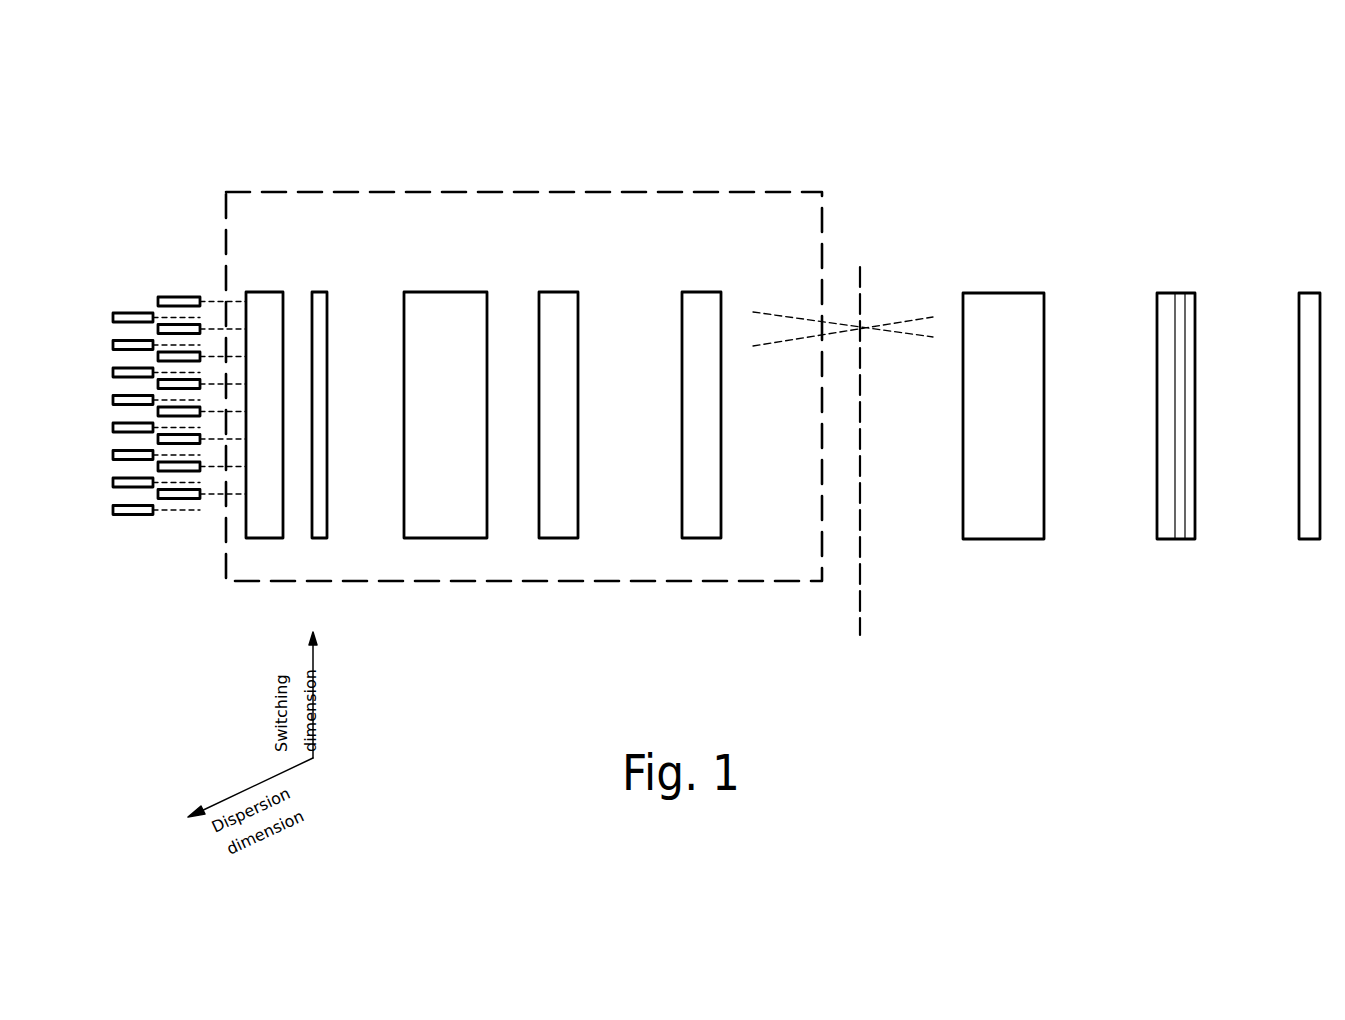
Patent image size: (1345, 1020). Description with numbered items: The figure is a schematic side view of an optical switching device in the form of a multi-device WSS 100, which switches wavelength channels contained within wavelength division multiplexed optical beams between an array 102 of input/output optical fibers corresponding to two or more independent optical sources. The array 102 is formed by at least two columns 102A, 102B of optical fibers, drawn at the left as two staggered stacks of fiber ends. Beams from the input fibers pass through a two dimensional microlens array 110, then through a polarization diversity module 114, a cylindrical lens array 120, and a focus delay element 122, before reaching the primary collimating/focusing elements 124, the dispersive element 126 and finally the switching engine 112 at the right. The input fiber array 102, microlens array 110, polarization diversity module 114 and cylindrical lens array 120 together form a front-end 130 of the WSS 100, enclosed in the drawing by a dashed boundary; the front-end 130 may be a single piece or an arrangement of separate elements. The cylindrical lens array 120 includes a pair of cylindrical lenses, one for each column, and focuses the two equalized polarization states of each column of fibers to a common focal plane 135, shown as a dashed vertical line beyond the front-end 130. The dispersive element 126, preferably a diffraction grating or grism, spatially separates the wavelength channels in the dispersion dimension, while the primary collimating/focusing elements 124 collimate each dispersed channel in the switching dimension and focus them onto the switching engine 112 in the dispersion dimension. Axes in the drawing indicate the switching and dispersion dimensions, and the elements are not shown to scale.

The multi-device WSS 100 is at (869, 132).
The array of input/output optical fibers 102 is at (232, 246).
The first column of optical fibers 102A is at (180, 296).
The second column of optical fibers 102B is at (132, 312).
The two dimensional microlens array 110 is at (320, 291).
The switching engine 112 is at (1310, 291).
The polarization diversity module 114 is at (450, 291).
The cylindrical lens array 120 is at (558, 291).
The focus delay element 122 is at (700, 291).
The primary collimating/focusing elements 124 is at (1012, 291).
The dispersive element 126 is at (1170, 291).
The front-end 130 is at (473, 192).
The common focal plane 135 is at (860, 266).